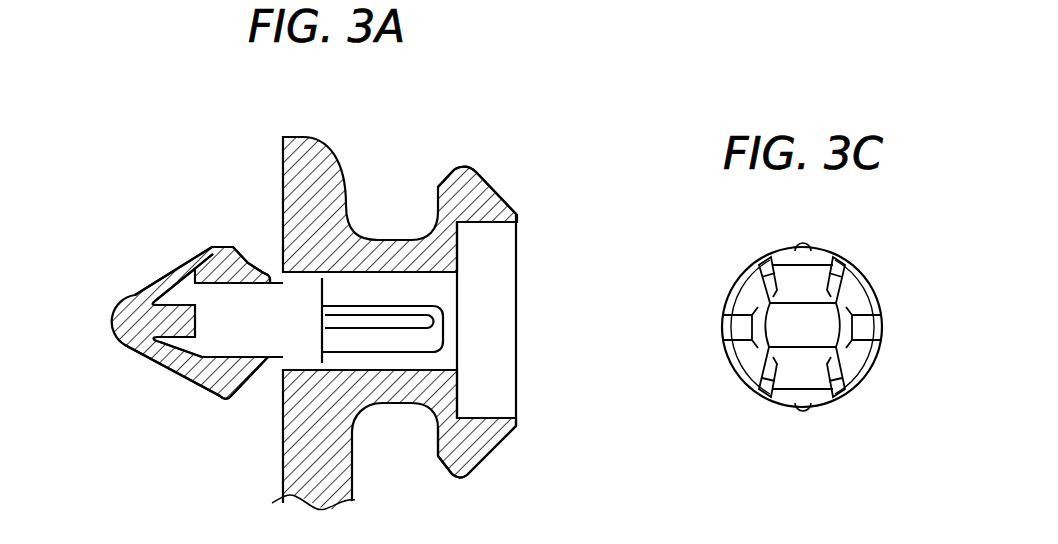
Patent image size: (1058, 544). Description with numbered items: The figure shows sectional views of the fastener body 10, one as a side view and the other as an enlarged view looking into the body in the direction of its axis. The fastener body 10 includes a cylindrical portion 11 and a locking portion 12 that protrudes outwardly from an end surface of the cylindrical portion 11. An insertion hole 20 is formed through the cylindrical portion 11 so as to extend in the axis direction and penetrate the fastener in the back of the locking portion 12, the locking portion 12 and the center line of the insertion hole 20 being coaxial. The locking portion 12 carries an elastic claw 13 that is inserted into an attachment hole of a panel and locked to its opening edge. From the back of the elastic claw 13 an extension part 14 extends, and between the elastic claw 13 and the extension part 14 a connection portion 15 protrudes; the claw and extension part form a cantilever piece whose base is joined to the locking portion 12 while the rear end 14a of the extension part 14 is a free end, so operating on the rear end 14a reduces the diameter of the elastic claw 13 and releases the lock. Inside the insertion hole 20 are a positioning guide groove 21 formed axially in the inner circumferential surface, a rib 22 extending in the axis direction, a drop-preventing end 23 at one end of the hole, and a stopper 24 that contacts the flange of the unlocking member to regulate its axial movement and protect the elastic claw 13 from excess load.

In FIG. 3A, the fastener body 10 is at (543, 234).
In FIG. 3A, the cylindrical portion 11 is at (486, 190).
In FIG. 3A, the locking portion 12 is at (112, 325).
In FIG. 3A, the elastic claw 13 is at (176, 268).
In FIG. 3C, the elastic claw 13 is at (817, 280).
In FIG. 3A, the extension part 14 is at (264, 267).
In FIG. 3A, the rear end 14a is at (266, 366).
In FIG. 3A, the connection portion 15 is at (222, 243).
In FIG. 3A, the insertion hole 20 is at (506, 402).
In FIG. 3A, the positioning guide groove 21 is at (430, 274).
In FIG. 3C, the positioning guide groove 21 is at (798, 251).
In FIG. 3A, the rib 22 is at (394, 320).
In FIG. 3C, the rib 22 is at (743, 340).
In FIG. 3A, the drop-preventing end 23 is at (425, 348).
In FIG. 3A, the stopper 24 is at (503, 417).